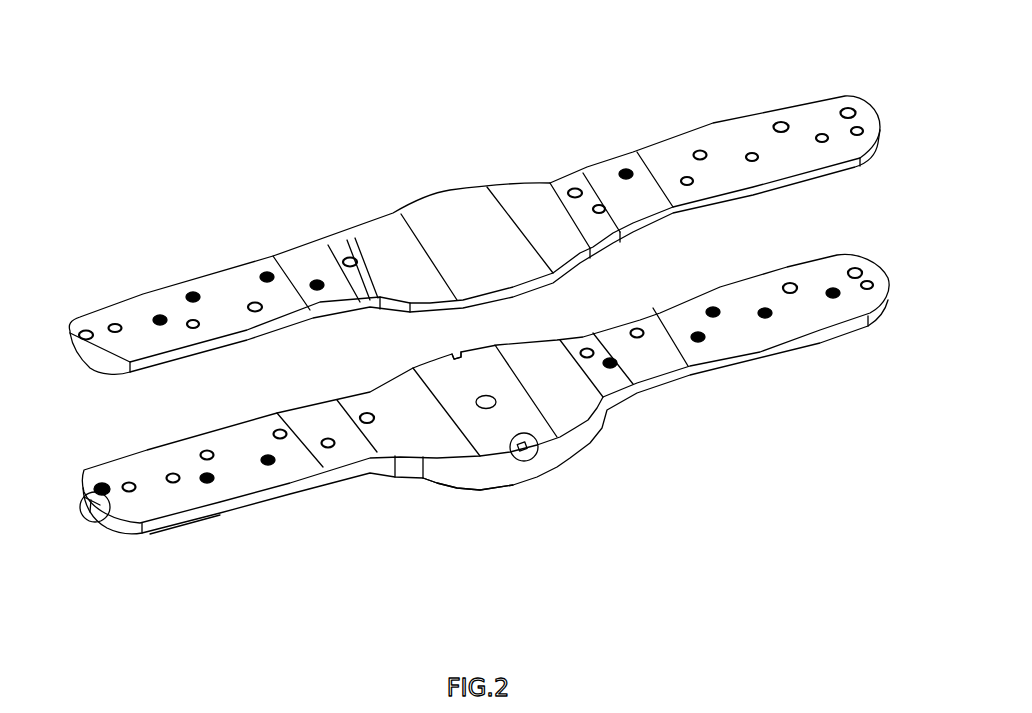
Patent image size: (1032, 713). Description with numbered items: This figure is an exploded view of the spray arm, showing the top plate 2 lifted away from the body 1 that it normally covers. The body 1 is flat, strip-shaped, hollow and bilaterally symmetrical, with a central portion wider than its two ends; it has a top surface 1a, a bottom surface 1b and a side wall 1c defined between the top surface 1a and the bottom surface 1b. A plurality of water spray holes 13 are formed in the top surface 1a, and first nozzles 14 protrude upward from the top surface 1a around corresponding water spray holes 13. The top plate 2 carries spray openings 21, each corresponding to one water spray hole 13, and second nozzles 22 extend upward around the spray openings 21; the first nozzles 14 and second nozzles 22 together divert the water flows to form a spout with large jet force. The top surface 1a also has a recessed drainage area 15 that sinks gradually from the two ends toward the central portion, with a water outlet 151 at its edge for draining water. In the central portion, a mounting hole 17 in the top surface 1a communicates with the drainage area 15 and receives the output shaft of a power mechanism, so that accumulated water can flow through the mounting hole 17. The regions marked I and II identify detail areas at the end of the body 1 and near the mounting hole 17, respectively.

The body 1 is at (472, 406).
The top surface 1a is at (147, 467).
The bottom surface 1b is at (185, 546).
The side wall 1c is at (220, 503).
The top plate 2 is at (474, 190).
The water spray holes 13 is at (280, 432).
The first nozzles 14 is at (207, 452).
The drainage area 15 is at (439, 456).
The mounting hole 17 is at (496, 401).
The spray openings 21 is at (160, 319).
The second nozzles 22 is at (194, 296).
The water outlet 151 is at (456, 354).
The detail region I is at (87, 518).
The detail region II is at (535, 461).